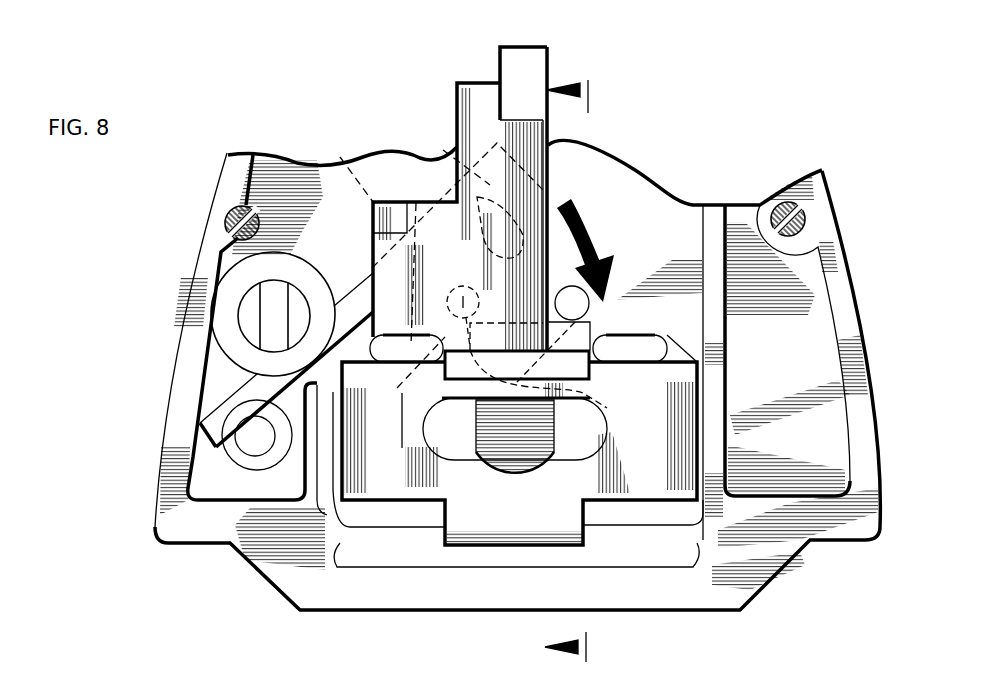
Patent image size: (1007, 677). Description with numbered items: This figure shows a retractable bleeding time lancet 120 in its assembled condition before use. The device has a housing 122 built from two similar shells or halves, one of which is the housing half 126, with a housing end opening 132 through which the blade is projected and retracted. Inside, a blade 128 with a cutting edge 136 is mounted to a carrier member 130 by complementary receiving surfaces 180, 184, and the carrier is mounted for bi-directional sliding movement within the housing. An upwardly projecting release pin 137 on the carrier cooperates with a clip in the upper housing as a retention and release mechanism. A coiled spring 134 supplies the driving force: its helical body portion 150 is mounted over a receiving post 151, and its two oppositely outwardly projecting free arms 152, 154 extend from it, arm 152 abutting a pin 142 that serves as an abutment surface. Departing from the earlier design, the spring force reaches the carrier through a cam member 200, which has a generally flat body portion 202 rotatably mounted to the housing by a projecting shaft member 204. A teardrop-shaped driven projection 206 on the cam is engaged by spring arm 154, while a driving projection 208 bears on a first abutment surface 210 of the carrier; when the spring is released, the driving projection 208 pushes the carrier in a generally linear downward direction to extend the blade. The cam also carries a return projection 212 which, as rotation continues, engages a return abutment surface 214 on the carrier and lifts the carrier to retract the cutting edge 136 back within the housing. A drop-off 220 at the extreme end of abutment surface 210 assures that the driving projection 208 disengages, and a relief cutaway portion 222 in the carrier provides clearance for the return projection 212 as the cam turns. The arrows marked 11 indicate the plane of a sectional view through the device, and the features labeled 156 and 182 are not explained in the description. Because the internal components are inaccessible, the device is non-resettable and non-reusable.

The section line 11- 11 is at (584, 370).
The retractable bleeding time lancet 120 is at (183, 207).
The housing 122 is at (168, 324).
The housing shell or half 126 is at (163, 504).
The blade 128 is at (497, 523).
The carrier member 130 is at (550, 147).
The housing end opening 132 is at (703, 590).
The coiled spring 134 is at (222, 368).
The cutting edge 136 is at (578, 545).
The release pin 137 is at (528, 60).
The pin 142 is at (247, 440).
The hub 150 is at (292, 272).
The receiving post 151 is at (265, 313).
The spring free end or arm 152 is at (205, 421).
The spring free end or arm 154 is at (437, 147).
The pivot boss 156 is at (258, 451).
The receiving surface 180 is at (487, 435).
The slide cavity 182 is at (566, 455).
The receiving surface 184 is at (560, 386).
The cam member 200 is at (575, 263).
The flat body portion 202 is at (558, 259).
The shaft member 204 is at (463, 285).
The driven projection 206 is at (552, 186).
The driving projection 208 is at (590, 303).
The first abutment surface 210 is at (591, 318).
The return projection 212 is at (603, 403).
The return abutment surface 214 is at (431, 257).
The drop-off 220 is at (408, 377).
The relief cutaway portion 222 is at (445, 382).